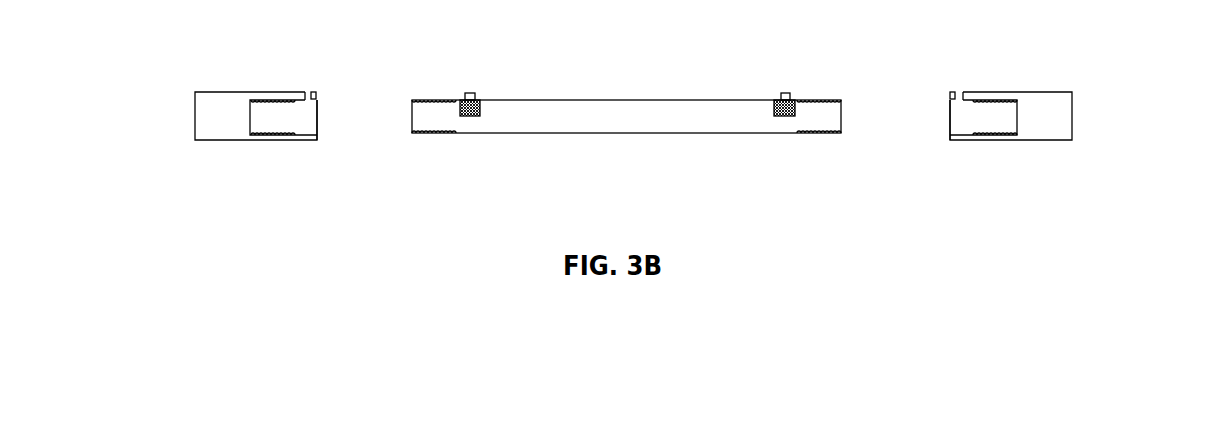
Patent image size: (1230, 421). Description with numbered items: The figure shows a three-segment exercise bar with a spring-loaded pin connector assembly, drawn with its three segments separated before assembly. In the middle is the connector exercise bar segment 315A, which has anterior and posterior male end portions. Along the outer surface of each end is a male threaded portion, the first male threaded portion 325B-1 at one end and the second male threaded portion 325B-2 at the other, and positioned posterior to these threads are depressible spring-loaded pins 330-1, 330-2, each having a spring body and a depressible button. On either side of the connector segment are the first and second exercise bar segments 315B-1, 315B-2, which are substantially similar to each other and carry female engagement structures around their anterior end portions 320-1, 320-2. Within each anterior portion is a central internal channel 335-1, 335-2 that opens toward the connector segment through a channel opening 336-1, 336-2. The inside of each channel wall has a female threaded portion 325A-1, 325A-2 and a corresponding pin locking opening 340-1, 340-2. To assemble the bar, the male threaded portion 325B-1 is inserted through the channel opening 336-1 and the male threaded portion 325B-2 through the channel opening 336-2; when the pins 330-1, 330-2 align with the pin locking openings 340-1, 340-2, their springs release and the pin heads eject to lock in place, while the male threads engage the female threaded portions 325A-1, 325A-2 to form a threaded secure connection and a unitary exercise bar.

The connector exercise bar segment 315A is at (626, 101).
The first exercise bar segment 315B-1 is at (230, 118).
The second exercise bar segment 315B-2 is at (1035, 118).
The anterior end portion 320-1 is at (222, 97).
The anterior end portion 320-2 is at (1056, 82).
The female threaded portion 325A-1 is at (259, 140).
The female threaded portion 325A-2 is at (1008, 135).
The first male threaded portion 325B-1 is at (437, 135).
The second male threaded portion 325B-2 is at (800, 133).
The spring-loaded pin 330-1 is at (466, 93).
The spring-loaded pin 330-2 is at (784, 93).
The central internal channel 335-1 is at (303, 130).
The central internal channel 335-2 is at (963, 128).
The channel opening 336-1 is at (317, 115).
The channel opening 336-2 is at (950, 117).
The pin locking opening 340-1 is at (308, 95).
The pin locking opening 340-2 is at (968, 82).